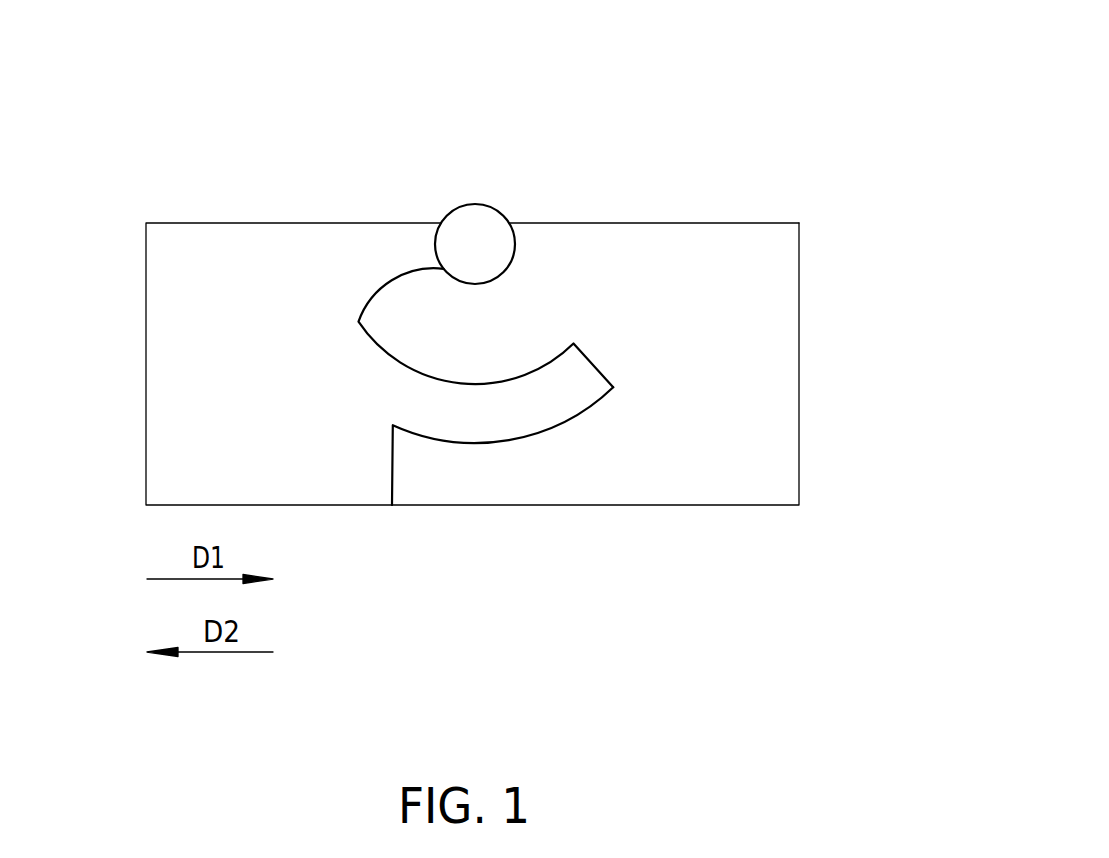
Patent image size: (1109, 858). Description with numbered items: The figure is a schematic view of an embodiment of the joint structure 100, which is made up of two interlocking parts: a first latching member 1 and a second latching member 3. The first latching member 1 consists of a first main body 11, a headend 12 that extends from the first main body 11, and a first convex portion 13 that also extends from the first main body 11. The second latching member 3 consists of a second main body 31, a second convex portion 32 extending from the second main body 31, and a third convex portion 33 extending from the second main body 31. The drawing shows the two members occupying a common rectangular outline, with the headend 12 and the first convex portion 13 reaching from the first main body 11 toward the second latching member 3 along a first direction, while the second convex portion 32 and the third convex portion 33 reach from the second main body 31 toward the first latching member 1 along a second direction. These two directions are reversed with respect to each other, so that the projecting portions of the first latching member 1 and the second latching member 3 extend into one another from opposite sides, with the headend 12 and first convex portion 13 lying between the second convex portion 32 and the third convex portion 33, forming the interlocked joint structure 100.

The joint structure 100 is at (793, 52).
The first latching member 1 is at (97, 182).
The first main body 11 is at (230, 278).
The headend 12 is at (473, 243).
The first convex portion 13 is at (492, 408).
The second latching member 3 is at (847, 243).
The second main body 31 is at (713, 344).
The second convex portion 32 is at (453, 331).
The third convex portion 33 is at (453, 472).